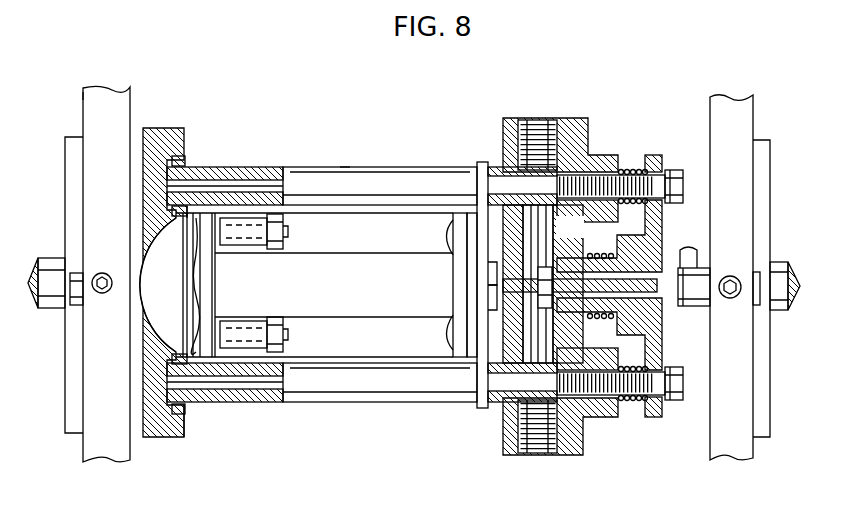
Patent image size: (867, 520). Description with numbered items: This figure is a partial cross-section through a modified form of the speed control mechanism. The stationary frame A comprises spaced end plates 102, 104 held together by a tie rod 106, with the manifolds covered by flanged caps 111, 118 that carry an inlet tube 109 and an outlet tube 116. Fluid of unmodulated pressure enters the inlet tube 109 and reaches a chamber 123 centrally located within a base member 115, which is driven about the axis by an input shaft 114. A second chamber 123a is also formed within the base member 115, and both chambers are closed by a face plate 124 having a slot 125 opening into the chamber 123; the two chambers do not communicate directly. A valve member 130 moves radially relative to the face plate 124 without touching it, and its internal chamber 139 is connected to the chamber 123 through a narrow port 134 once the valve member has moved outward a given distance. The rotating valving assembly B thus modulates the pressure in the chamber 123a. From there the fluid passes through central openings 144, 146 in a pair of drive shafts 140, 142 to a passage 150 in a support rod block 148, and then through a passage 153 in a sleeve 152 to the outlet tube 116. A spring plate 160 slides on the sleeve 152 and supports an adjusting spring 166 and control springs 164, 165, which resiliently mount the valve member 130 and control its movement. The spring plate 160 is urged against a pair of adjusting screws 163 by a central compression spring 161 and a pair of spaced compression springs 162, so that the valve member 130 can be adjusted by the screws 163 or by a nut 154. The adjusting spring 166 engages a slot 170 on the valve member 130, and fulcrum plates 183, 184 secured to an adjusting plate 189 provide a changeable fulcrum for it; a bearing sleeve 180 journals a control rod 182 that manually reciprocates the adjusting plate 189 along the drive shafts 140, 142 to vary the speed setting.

The stationary frame A is at (80, 95).
The body assembly B is at (346, 158).
The end plate 102 is at (108, 462).
The end plate 104 is at (743, 462).
The tie rod 106 is at (75, 300).
The inlet tube 109 is at (48, 260).
The flanged cap 111 is at (70, 433).
The input shaft 114 is at (152, 298).
The base member 115 is at (167, 128).
The outlet tube 116 is at (792, 311).
The flanged cap 118 is at (762, 391).
The chamber 123 is at (168, 247).
The second chamber 123a is at (165, 168).
The face plate 124 is at (190, 412).
The slot 125 is at (167, 316).
The valve member 130 is at (190, 207).
The narrow port 134 is at (191, 276).
The chamber 139 is at (200, 347).
The drive shaft 140 is at (283, 170).
The drive shaft 142 is at (330, 363).
The central opening 144 is at (238, 167).
The central opening 146 is at (287, 395).
The support rod block 148 is at (575, 118).
The passage 150 is at (528, 215).
The sleeve 152 is at (662, 262).
The passage 153 is at (655, 310).
The nut 154 is at (695, 252).
The spring plate 160 is at (655, 155).
The central compression spring 161 is at (598, 320).
The compression springs 162 is at (632, 170).
The adjusting screws 163 is at (672, 170).
The control spring 164 is at (480, 272).
The control spring 165 is at (483, 303).
The adjusting spring 166 is at (333, 256).
The slot 170 is at (197, 352).
The bearing sleeve 180 is at (525, 292).
The control rod 182 is at (562, 278).
The fulcrum plate 183 is at (470, 276).
The fulcrum plate 184 is at (455, 246).
The adjusting plate 189 is at (480, 162).